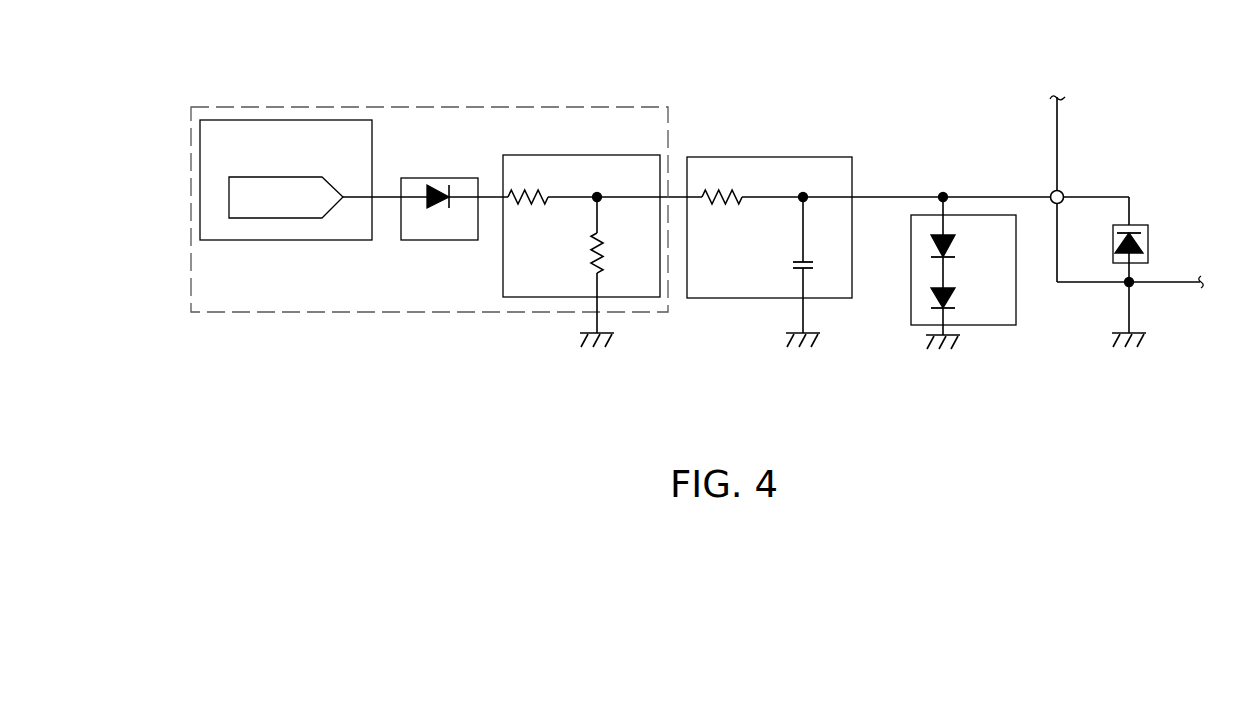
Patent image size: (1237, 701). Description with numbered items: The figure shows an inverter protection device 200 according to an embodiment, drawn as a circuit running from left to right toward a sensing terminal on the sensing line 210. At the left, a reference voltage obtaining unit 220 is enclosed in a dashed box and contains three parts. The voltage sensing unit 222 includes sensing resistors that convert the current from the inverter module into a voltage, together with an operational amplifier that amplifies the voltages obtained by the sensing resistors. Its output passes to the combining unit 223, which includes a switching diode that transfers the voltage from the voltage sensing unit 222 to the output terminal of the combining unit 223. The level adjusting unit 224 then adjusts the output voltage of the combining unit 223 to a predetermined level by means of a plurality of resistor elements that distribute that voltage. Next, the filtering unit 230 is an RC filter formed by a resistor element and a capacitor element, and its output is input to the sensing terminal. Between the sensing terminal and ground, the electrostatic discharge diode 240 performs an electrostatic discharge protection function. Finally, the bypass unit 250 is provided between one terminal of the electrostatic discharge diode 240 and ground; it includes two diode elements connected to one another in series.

The protection circuit 200 is at (1215, 86).
The current sense (CS) line 210 is at (1087, 128).
The reference voltage obtaining unit 220 is at (560, 107).
The voltage sensing unit 222 is at (328, 120).
The combining unit 223 is at (452, 177).
The level adjusting unit 224 is at (562, 155).
The filtering unit 230 is at (837, 157).
The electrostatic discharge diode 240 is at (1145, 225).
The bypass unit 250 is at (993, 325).